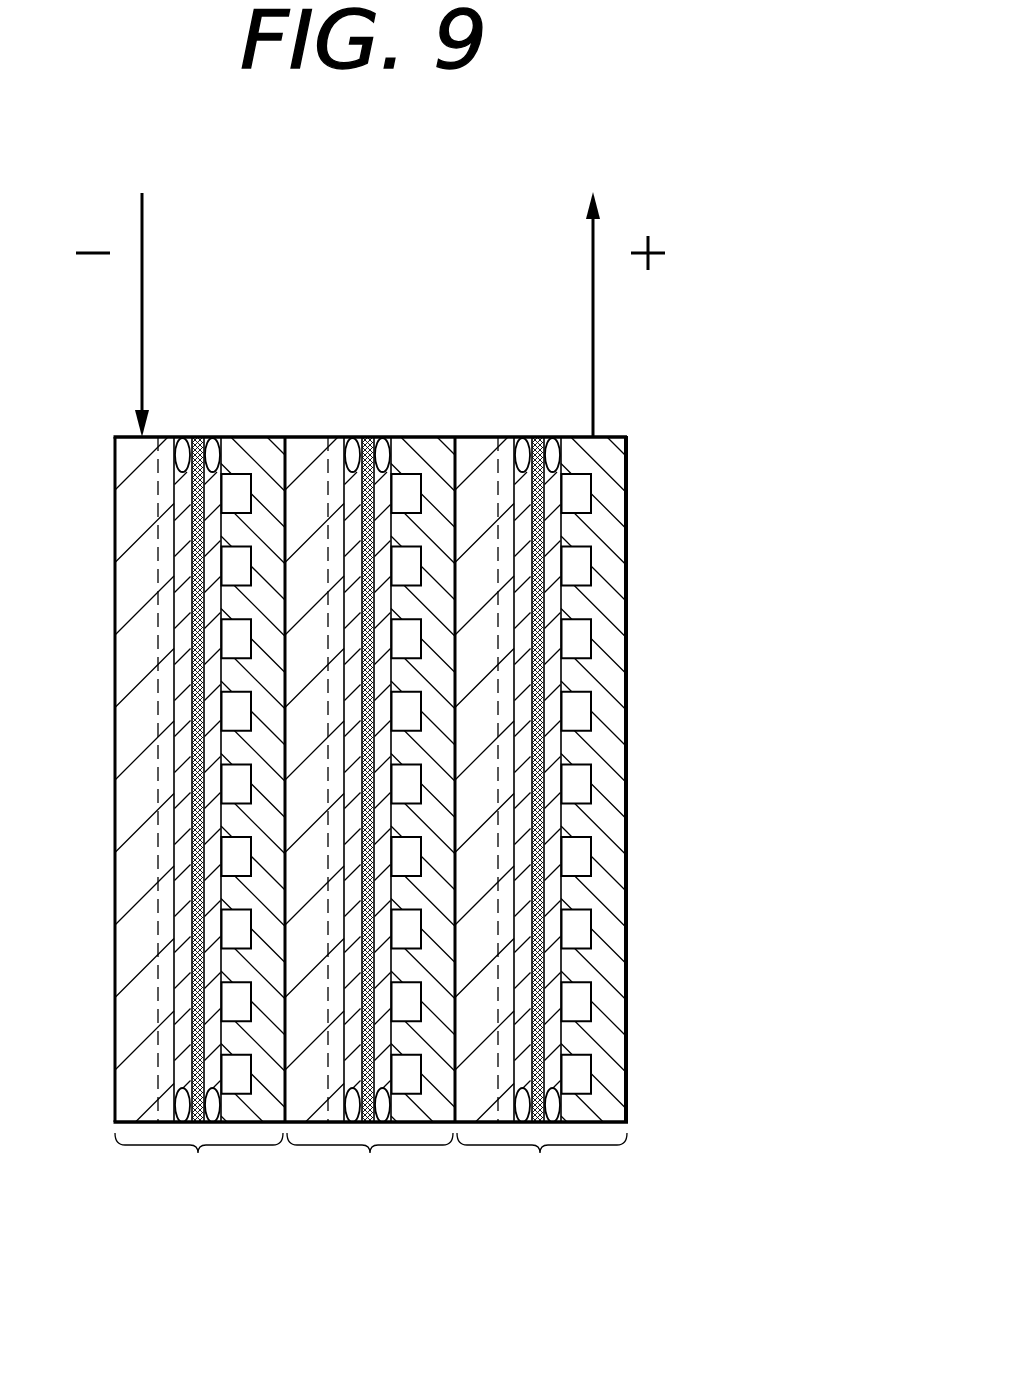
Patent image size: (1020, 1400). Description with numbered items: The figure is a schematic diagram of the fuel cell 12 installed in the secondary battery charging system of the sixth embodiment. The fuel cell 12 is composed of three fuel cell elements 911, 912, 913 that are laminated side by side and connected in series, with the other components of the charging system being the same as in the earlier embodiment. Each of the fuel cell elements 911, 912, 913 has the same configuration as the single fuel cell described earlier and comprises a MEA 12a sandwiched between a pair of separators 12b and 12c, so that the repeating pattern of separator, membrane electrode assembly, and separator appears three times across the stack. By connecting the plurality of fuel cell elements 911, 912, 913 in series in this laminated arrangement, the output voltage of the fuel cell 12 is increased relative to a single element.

The fuel cell 12 is at (668, 546).
The MEA 12a is at (553, 957).
The separator 12b is at (600, 1127).
The separator 12c is at (475, 1127).
The fuel cell element 911 is at (540, 1160).
The fuel cell element 912 is at (370, 1160).
The fuel cell element 913 is at (198, 1160).